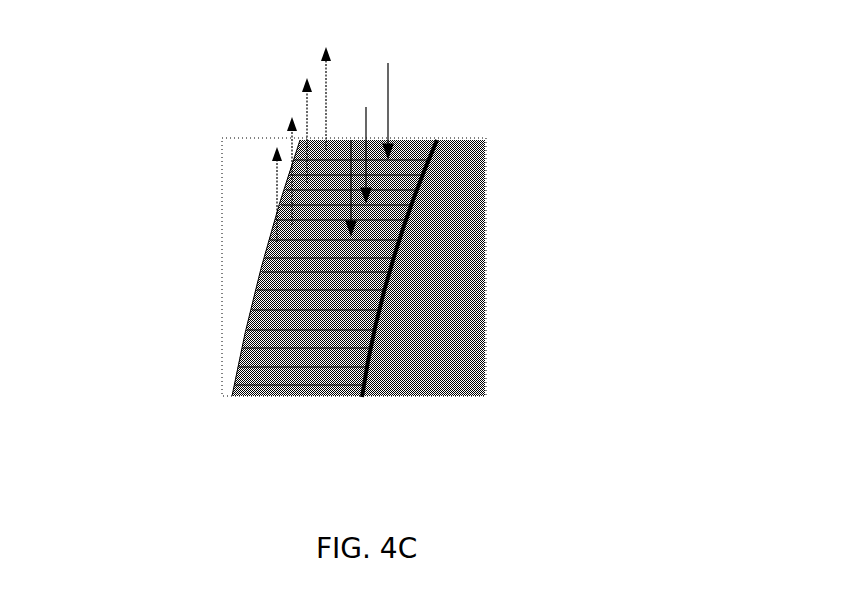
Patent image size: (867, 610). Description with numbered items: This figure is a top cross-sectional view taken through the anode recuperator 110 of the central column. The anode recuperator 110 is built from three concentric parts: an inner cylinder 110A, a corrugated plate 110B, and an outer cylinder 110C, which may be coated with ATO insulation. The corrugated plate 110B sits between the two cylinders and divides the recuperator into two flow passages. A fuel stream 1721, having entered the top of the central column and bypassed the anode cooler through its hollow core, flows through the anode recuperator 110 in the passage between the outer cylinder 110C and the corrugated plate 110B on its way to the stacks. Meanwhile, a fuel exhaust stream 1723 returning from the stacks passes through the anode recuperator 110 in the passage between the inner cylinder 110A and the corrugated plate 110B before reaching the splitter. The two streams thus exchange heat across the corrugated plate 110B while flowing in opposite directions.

The anode recuperator 110 is at (373, 464).
The inner cylinder 110A is at (389, 290).
The corrugated plate 110B is at (341, 328).
The outer cylinder 110C is at (262, 291).
The fuel stream 1721 is at (389, 103).
The fuel exhaust stream 1723 is at (276, 178).